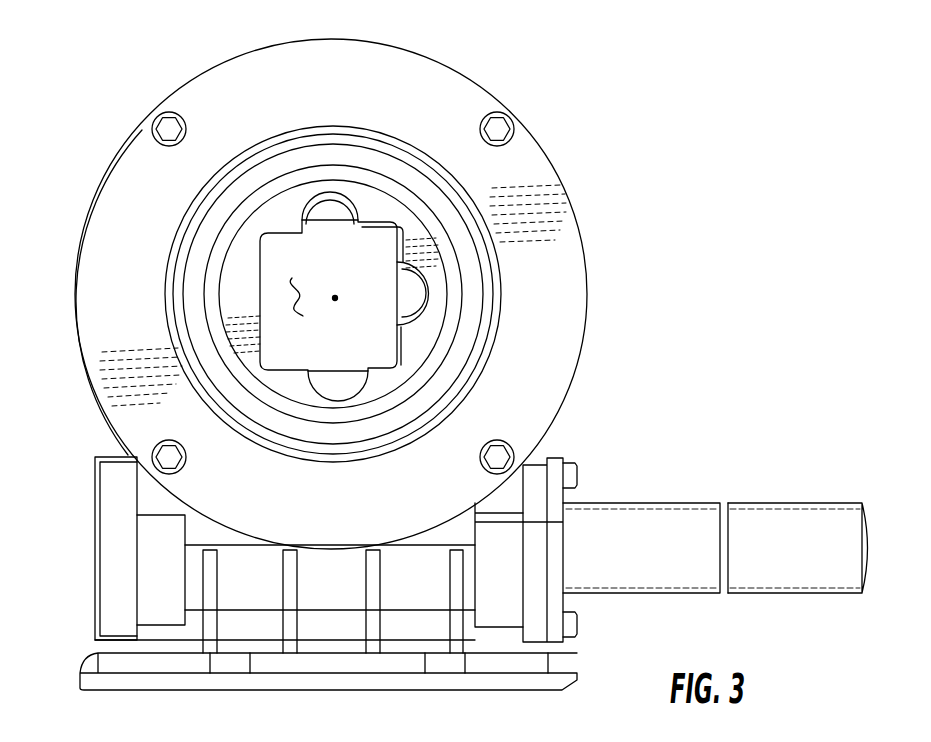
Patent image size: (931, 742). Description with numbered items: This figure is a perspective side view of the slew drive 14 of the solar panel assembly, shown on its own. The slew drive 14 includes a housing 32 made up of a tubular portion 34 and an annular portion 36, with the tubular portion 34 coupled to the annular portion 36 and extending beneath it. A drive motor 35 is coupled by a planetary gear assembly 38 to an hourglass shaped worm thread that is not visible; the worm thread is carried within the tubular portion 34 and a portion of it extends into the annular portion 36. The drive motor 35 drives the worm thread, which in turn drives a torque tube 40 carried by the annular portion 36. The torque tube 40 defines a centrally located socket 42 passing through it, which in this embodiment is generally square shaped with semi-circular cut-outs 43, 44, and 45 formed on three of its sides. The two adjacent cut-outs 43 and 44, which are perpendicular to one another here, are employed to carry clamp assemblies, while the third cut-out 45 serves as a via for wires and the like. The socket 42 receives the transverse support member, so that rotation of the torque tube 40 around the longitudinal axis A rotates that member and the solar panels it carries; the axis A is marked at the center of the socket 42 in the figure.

The slew drive 14 is at (451, 345).
The housing 32 is at (548, 443).
The tubular portion 34 is at (158, 503).
The drive motor 35 is at (805, 517).
The annular portion 36 is at (586, 283).
The planetary gear assembly 38 is at (682, 515).
The torque tube 40 is at (433, 170).
The socket 42 is at (342, 223).
The semi-circular cut-out 43 is at (310, 210).
The semi-circular cut-out 44 is at (410, 298).
The semi-circular cut-out 45 is at (342, 378).
The longitudinal axis A is at (335, 296).